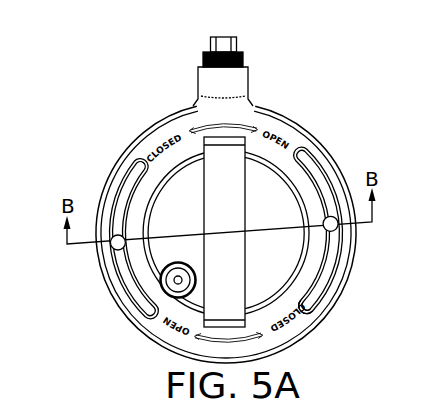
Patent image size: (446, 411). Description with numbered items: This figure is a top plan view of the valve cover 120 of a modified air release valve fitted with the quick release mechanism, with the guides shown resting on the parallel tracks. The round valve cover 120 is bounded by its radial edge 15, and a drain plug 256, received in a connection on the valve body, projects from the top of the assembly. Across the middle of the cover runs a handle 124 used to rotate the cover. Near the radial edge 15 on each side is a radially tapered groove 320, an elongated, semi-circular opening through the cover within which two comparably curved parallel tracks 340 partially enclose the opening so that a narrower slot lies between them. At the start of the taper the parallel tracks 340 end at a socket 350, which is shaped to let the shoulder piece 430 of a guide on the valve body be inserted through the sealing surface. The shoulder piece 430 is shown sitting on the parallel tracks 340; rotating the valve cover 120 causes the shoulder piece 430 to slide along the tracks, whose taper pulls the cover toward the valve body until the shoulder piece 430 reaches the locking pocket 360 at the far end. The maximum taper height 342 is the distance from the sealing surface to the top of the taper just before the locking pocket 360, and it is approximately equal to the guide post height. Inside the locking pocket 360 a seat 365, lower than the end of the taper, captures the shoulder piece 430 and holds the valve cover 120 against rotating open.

The valve cover 120 is at (251, 214).
The radial edge 15 is at (200, 234).
The drain plug 256 is at (264, 71).
The handle 124 is at (151, 212).
The seat 365 is at (84, 239).
The socket 350 is at (105, 257).
The shoulder piece 430 is at (76, 280).
The radially tapered groove 320 is at (354, 220).
The parallel tracks 340 is at (365, 230).
The maximum taper height 342 is at (355, 300).
The locking pocket 360 is at (363, 321).